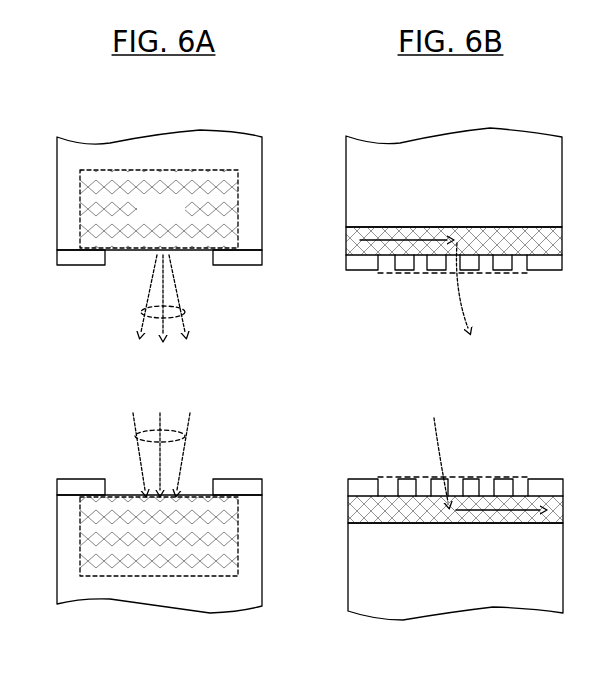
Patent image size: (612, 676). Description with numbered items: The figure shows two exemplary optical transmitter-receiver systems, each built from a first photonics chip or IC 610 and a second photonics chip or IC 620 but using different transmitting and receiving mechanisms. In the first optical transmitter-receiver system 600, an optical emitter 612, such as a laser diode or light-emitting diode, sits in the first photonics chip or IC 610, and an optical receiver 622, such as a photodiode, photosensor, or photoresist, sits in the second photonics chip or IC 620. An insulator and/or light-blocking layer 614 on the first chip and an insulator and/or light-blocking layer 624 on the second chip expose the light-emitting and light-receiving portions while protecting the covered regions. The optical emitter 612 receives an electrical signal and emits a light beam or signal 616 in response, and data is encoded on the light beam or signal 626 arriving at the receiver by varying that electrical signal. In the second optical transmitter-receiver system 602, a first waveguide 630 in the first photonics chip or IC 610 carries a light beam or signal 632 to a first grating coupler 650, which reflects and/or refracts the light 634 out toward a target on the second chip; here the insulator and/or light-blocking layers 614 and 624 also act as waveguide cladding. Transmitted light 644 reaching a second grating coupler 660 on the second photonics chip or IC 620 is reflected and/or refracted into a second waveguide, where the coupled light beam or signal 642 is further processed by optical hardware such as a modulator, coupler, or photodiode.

In FIG. 6A, the optical transmitter-receiver system 600 is at (145, 108).
In FIG. 6B, the second optical transmitter-receiver system 602 is at (437, 110).
In FIG. 6A, the first photonics chip or IC 610 is at (231, 163).
In FIG. 6B, the first photonics chip or IC 610 is at (475, 163).
In FIG. 6A, the optical emitter 612 is at (181, 218).
In FIG. 6A, the insulator and/or light-blocking layer 614 is at (88, 265).
In FIG. 6B, the insulator and/or light-blocking layer 614 is at (366, 268).
In FIG. 6A, the light beam or signal 616 is at (186, 309).
In FIG. 6A, the second photonics chip or IC 620 is at (190, 609).
In FIG. 6B, the second photonics chip or IC 620 is at (475, 578).
In FIG. 6A, the optical receiver 622 is at (130, 577).
In FIG. 6A, the insulator and/or light-blocking layer 624 is at (80, 478).
In FIG. 6B, the insulator and/or light-blocking layer 624 is at (368, 478).
In FIG. 6A, the light beam or signal 626 is at (190, 437).
In FIG. 6B, the first waveguide 630 is at (548, 246).
In FIG. 6B, the light beam or signal 632 is at (413, 232).
In FIG. 6B, the reflected light 634 is at (466, 304).
In FIG. 6B, the coupled light beam or signal 642 is at (489, 516).
In FIG. 6B, the transmitted light beam or signal 644 is at (434, 420).
In FIG. 6B, the first grating coupler 650 is at (419, 277).
In FIG. 6B, the second grating coupler 660 is at (499, 477).